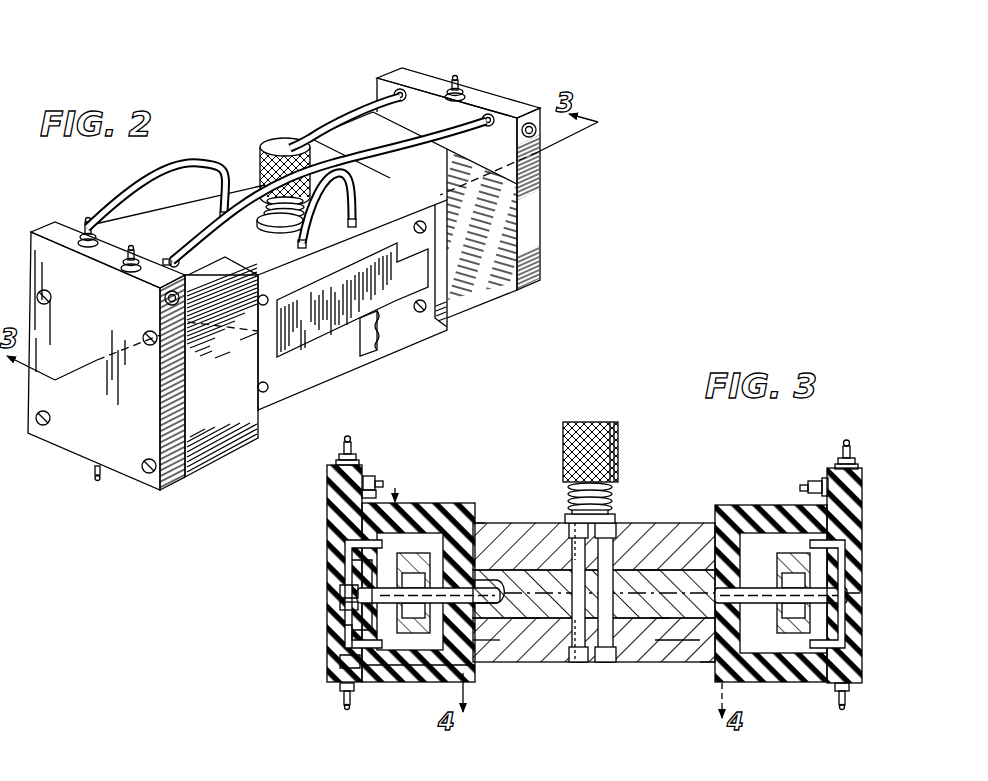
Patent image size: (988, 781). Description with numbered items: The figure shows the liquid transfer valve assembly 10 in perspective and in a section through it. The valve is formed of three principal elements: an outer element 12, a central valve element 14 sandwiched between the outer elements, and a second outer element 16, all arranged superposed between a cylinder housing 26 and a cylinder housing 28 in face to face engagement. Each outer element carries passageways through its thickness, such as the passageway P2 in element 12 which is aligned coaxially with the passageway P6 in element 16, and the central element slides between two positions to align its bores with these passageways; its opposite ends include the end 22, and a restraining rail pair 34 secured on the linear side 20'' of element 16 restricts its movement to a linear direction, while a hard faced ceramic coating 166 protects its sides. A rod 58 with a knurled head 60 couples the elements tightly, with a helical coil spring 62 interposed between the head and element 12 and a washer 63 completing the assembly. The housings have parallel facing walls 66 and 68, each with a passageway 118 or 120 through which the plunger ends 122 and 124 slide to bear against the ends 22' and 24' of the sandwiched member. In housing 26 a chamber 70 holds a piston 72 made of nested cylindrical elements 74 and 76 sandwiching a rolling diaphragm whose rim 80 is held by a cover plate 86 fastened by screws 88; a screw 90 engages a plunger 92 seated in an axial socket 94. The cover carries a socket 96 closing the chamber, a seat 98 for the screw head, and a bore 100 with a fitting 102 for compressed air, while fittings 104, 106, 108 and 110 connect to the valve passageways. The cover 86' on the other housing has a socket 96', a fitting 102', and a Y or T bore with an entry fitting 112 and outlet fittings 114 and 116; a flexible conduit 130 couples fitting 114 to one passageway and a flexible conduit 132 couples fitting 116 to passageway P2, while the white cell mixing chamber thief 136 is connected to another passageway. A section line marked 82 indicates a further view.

In FIG. 2, the liquid transfer valve assembly 10 is at (582, 157).
In FIG. 3, the outer valve element 12 is at (660, 523).
In FIG. 3, the central valve element 14 is at (650, 637).
In FIG. 3, the outer valve element 16 is at (658, 654).
In FIG. 2, the linear side 20'' is at (363, 352).
In FIG. 3, the end 22 is at (531, 574).
In FIG. 3, the end of sandwiched member 22' is at (568, 571).
In FIG. 3, the end of sandwiched member 24' is at (783, 593).
In FIG. 3, the cylinder housing 26 is at (387, 485).
In FIG. 2, the cylinder housing 28 is at (486, 295).
In FIG. 3, the cylinder housing 28 is at (737, 504).
In FIG. 2, the restraining rail pair 34 is at (380, 331).
In FIG. 3, the rod 58 is at (613, 498).
In FIG. 3, the knurled head 60 is at (618, 450).
In FIG. 3, the helical coil spring 62 is at (613, 485).
In FIG. 3, the washer 63 is at (618, 518).
In FIG. 3, the facing wall 66 is at (481, 523).
In FIG. 2, the facing wall 68 is at (435, 335).
In FIG. 3, the facing wall 68 is at (714, 678).
In FIG. 3, the chamber 70 is at (435, 682).
In FIG. 3, the piston 72 is at (425, 503).
In FIG. 3, the cylindrical element 74 is at (392, 682).
In FIG. 3, the cylindrical element 76 is at (345, 540).
In FIG. 3, the rim 80 is at (352, 560).
In FIG. 3, the end plate 82 is at (327, 507).
In FIG. 2, the cover plate 86 is at (94, 361).
In FIG. 2, the cover 86' is at (479, 179).
In FIG. 3, the cover 86' is at (866, 575).
In FIG. 2, the screws 88 is at (156, 488).
In FIG. 3, the screw 90 is at (340, 604).
In FIG. 3, the plunger 92 is at (489, 662).
In FIG. 3, the axial passageway or socket 94 is at (425, 550).
In FIG. 3, the socket 96 is at (321, 636).
In FIG. 3, the socket 96' is at (859, 584).
In FIG. 3, the seat 98 is at (340, 588).
In FIG. 3, the bore 100 is at (340, 655).
In FIG. 2, the fitting 102 is at (78, 488).
In FIG. 3, the fitting 102 is at (322, 701).
In FIG. 3, the fitting 102' is at (868, 702).
In FIG. 2, the fitting 104 is at (60, 241).
In FIG. 2, the fitting 106 is at (128, 270).
In FIG. 3, the fitting 106 is at (342, 443).
In FIG. 2, the fitting 108 is at (80, 225).
In FIG. 2, the fitting 110 is at (170, 260).
In FIG. 3, the fitting 110 is at (381, 477).
In FIG. 2, the fitting 112 is at (461, 86).
In FIG. 3, the fitting 112 is at (850, 450).
In FIG. 2, the fitting 114 is at (395, 93).
In FIG. 2, the fitting 116 is at (492, 116).
In FIG. 3, the fitting 116 is at (811, 462).
In FIG. 3, the passageway 118 is at (478, 583).
In FIG. 3, the passageway 120 is at (740, 604).
In FIG. 3, the plunger end 122 is at (525, 662).
In FIG. 2, the plunger end 124 is at (162, 171).
In FIG. 3, the plunger end 124 is at (662, 652).
In FIG. 2, the flexible conduit 130 is at (283, 161).
In FIG. 2, the flexible conduit 132 is at (475, 128).
In FIG. 2, the white cell mixing chamber thief 136 is at (232, 237).
In FIG. 2, the hard faced ceramic coating 166 is at (335, 311).
In FIG. 3, the passageway P2 is at (557, 533).
In FIG. 3, the passageway P6 is at (576, 664).